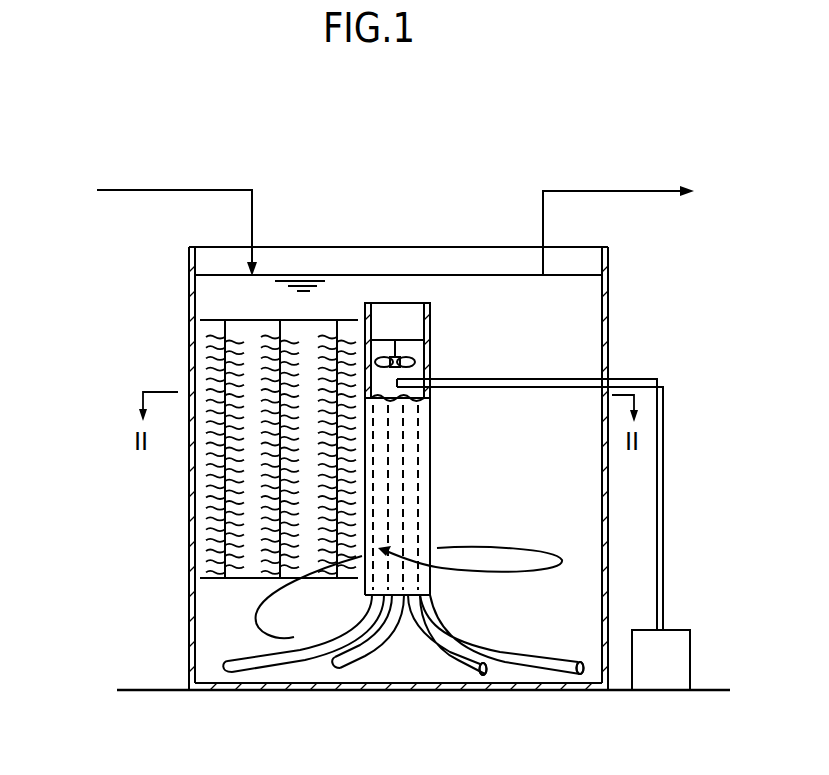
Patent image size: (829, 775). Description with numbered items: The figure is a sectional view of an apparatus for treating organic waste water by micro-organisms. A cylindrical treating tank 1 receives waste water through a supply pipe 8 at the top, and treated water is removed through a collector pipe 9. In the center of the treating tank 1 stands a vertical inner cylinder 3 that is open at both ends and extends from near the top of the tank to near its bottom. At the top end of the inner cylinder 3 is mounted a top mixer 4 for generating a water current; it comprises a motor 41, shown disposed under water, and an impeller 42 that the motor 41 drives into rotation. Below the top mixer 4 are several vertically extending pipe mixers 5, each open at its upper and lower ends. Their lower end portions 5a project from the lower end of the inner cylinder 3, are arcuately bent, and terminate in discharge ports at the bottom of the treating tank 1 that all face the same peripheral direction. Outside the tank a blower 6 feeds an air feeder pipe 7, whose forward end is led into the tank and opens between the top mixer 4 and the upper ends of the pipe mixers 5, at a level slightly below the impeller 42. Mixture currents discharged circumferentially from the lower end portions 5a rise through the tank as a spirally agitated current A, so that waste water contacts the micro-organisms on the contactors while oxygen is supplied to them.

The treating tank 1 is at (189, 293).
The inner cylinder 3 is at (432, 315).
The top mixer 4 is at (406, 302).
The motor 41 is at (410, 327).
The impeller 42 is at (428, 364).
The pipe mixers 5 is at (426, 668).
The lower end portions 5a is at (525, 660).
The blower 6 is at (678, 661).
The air feeder pipe 7 is at (664, 535).
The supply pipe 8 is at (173, 190).
The collector pipe 9 is at (599, 191).
The spirally agitated current A is at (513, 552).